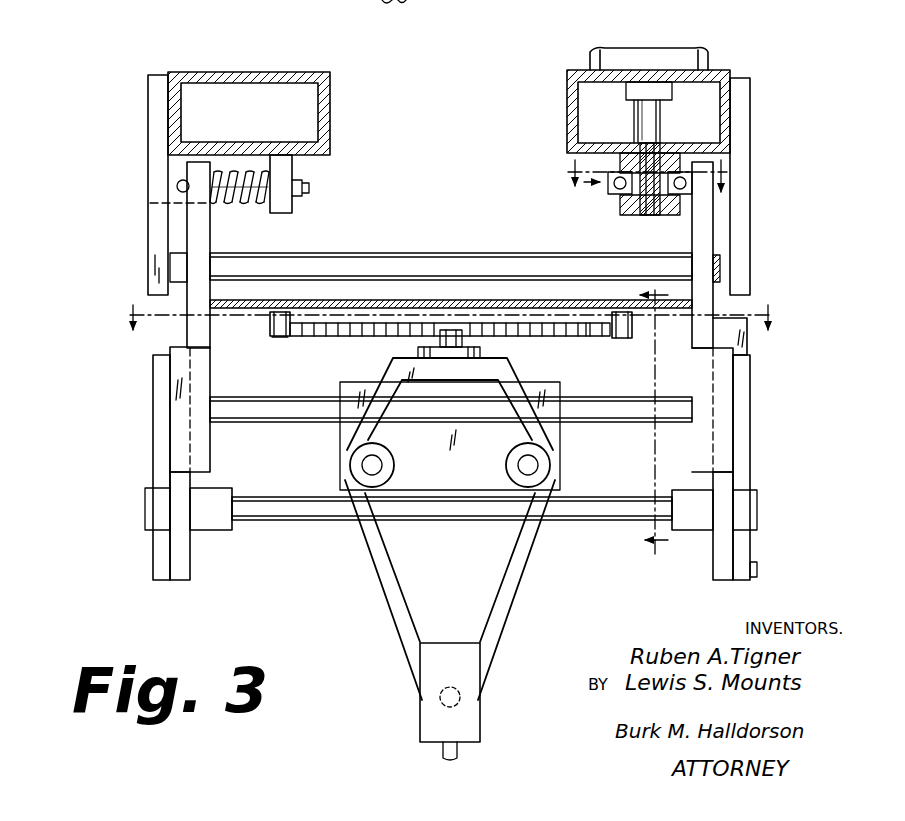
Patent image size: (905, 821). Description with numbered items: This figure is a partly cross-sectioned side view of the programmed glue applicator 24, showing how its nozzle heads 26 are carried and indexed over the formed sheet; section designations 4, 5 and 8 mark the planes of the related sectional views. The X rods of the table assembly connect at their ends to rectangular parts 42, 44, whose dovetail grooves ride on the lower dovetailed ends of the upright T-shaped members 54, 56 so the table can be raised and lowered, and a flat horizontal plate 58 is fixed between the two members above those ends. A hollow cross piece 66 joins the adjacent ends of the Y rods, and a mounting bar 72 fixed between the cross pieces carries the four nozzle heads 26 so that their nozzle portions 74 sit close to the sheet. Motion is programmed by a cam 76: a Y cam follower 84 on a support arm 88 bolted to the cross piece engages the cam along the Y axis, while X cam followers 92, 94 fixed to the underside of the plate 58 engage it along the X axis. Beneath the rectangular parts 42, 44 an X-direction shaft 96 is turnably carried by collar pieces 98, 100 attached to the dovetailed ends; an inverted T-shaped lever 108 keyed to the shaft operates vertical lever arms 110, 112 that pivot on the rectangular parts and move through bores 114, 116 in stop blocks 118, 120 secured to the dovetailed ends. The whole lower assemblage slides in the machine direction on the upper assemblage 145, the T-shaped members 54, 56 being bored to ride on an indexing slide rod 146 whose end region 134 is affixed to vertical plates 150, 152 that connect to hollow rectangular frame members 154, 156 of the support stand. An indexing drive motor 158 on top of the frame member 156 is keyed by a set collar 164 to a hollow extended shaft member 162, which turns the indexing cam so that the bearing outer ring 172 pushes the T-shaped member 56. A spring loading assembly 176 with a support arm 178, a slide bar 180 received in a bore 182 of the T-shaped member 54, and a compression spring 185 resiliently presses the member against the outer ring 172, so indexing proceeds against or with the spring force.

The glue applicator 24 is at (103, 132).
The nozzle heads 26 is at (475, 722).
The rectangular part 42 is at (178, 395).
The rectangular part 44 is at (727, 398).
The T-shaped member 54 is at (203, 322).
The T-shaped member 56 is at (693, 333).
The plate 58 is at (372, 312).
The cross piece 66 is at (510, 598).
The mounting bar 72 is at (460, 690).
The nozzle portions 74 is at (446, 750).
The cam 76 is at (592, 337).
The Y cam follower 84 is at (466, 338).
The support arm 88 is at (432, 356).
The X cam follower 92 is at (283, 335).
The X cam follower 94 is at (623, 340).
The shaft 96 is at (586, 512).
The collar piece 98 is at (218, 515).
The collar piece 100 is at (705, 522).
The inverted T-shaped lever 108 is at (727, 572).
The lever arm 110 is at (160, 440).
The lever arm 112 is at (740, 445).
The bore 114 is at (150, 500).
The bore 116 is at (752, 510).
The stop block 118 is at (155, 515).
The stop block 120 is at (752, 525).
The end region 134 is at (216, 262).
The upper assemblage 145 is at (772, 158).
The indexing slide rod 146 is at (424, 262).
The plate 150 is at (156, 258).
The plate 152 is at (752, 230).
The frame member 154 is at (300, 76).
The frame member 156 is at (575, 107).
The indexing drive motor 158 is at (643, 57).
The extended shaft member 162 is at (655, 122).
The set collar 164 is at (631, 88).
The outer ring 172 is at (690, 198).
The spring loading assembly 176 is at (322, 187).
The support arm 178 is at (288, 203).
The slide bar 180 is at (177, 183).
The bore 182 is at (152, 202).
The spring 185 is at (243, 178).
The section line 4- 4 is at (448, 328).
The section line 5- 5 is at (636, 427).
The section line 8- 8 is at (649, 192).